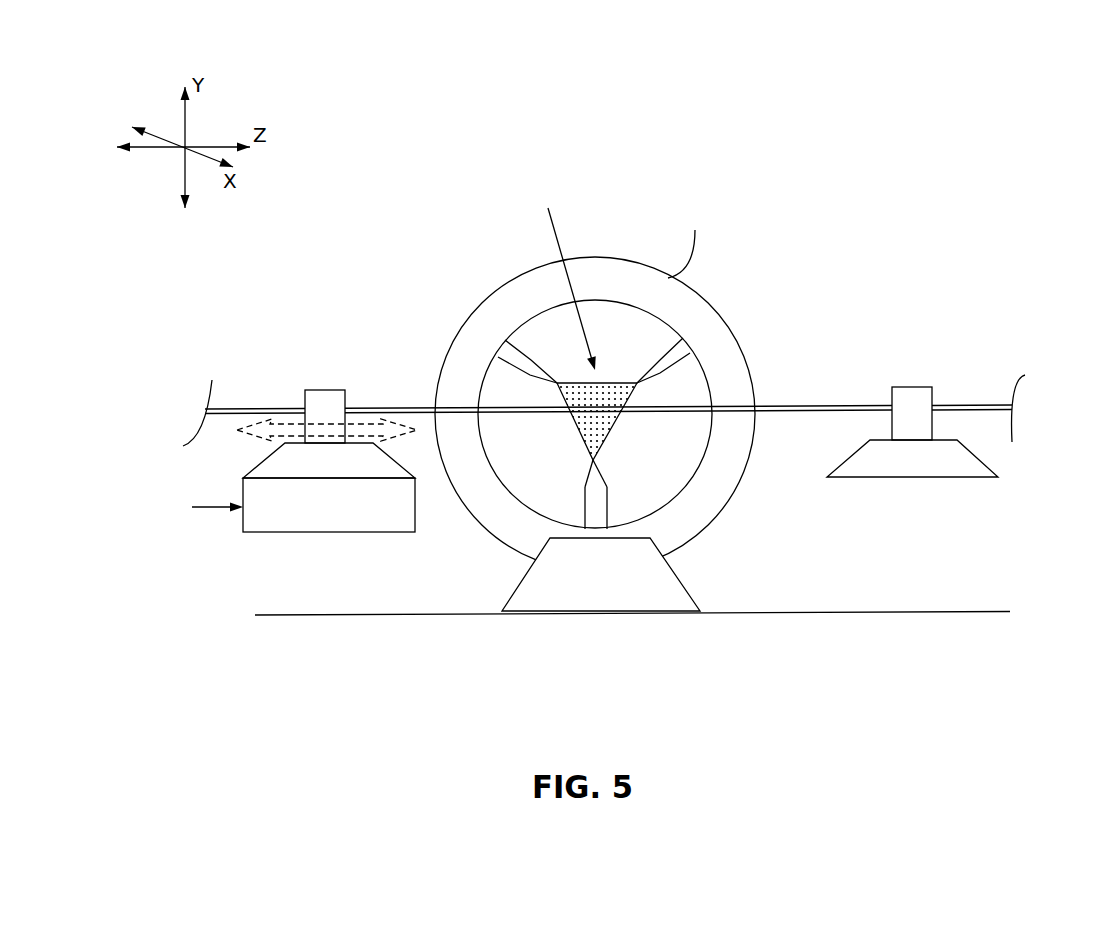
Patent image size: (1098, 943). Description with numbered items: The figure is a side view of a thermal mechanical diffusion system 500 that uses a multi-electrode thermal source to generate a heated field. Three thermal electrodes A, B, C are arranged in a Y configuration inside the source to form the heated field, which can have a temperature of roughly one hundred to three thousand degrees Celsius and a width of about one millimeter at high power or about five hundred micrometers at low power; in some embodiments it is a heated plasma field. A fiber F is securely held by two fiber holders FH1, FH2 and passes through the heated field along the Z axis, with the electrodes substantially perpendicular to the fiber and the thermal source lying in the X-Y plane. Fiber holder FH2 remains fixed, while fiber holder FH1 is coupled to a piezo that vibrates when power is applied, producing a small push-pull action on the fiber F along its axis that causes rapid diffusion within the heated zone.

The thermal mechanical diffusion system 500 is at (998, 203).
The fiber F is at (253, 405).
The fiber holder FH1 is at (345, 476).
The fiber holder FH2 is at (933, 468).
The thermal electrode A is at (548, 375).
The thermal electrode B is at (620, 503).
The thermal electrode C is at (685, 382).